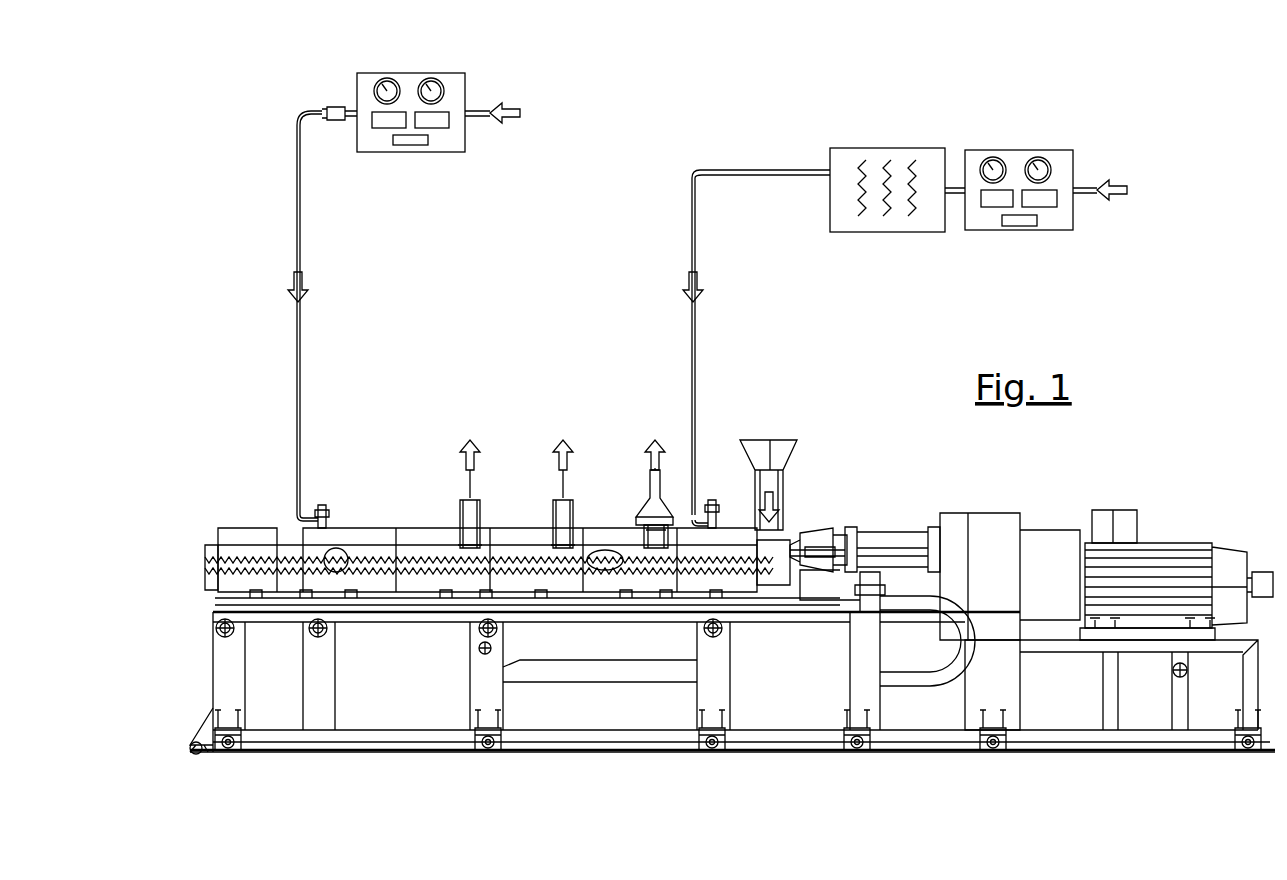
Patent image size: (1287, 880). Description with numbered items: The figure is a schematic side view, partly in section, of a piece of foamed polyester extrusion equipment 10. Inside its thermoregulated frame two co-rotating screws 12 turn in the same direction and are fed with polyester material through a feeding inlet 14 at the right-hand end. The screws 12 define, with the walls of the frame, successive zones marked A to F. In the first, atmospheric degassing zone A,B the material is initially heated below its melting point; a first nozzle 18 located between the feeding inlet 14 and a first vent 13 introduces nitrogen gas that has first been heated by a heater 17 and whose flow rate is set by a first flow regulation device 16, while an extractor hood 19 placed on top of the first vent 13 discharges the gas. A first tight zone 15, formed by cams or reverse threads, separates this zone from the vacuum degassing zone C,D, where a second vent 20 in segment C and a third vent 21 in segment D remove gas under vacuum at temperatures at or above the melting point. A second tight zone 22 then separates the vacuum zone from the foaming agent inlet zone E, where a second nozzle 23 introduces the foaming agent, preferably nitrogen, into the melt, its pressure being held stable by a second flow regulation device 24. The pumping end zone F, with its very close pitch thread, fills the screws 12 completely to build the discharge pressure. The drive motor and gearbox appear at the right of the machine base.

The foamed polyester extrusion equipment 10 is at (770, 392).
The co-rotating screws 12 is at (352, 537).
The first vent 13 is at (644, 528).
The feeding inlet 14 is at (758, 442).
The first tight zone 15 is at (601, 571).
The first flow regulation device 16 is at (1022, 150).
The heater 17 is at (890, 148).
The first nozzle 18 is at (712, 507).
The extractor hood 19 is at (650, 488).
The second vent 20 is at (555, 508).
The third vent 21 is at (462, 508).
The second tight zone 22 is at (337, 572).
The second nozzle 23 is at (322, 504).
The second flow regulation device 24 is at (416, 150).